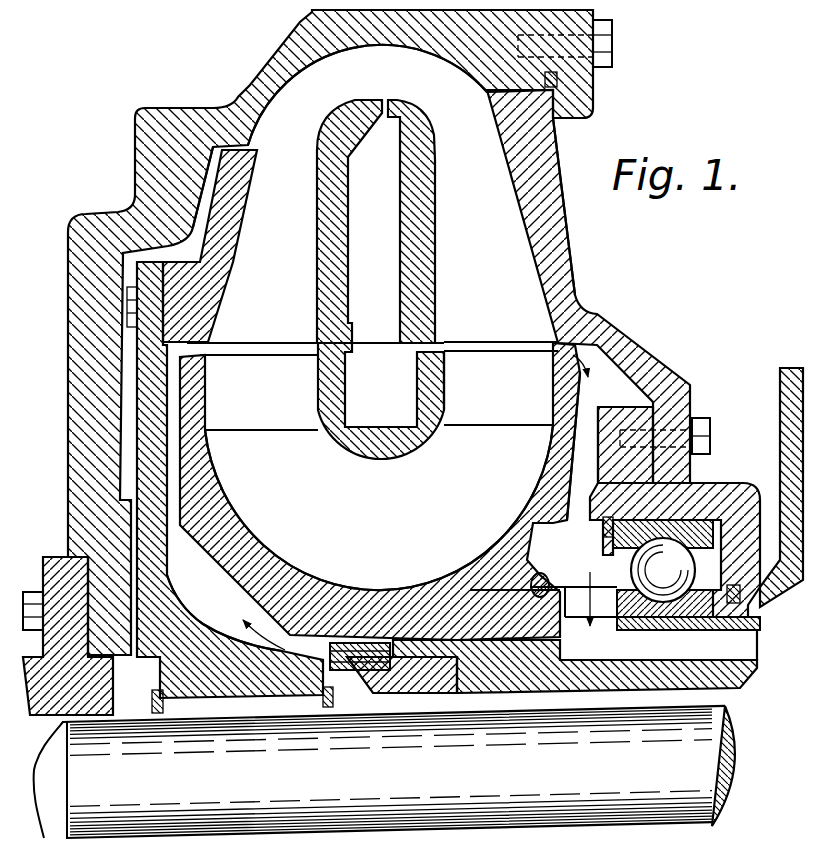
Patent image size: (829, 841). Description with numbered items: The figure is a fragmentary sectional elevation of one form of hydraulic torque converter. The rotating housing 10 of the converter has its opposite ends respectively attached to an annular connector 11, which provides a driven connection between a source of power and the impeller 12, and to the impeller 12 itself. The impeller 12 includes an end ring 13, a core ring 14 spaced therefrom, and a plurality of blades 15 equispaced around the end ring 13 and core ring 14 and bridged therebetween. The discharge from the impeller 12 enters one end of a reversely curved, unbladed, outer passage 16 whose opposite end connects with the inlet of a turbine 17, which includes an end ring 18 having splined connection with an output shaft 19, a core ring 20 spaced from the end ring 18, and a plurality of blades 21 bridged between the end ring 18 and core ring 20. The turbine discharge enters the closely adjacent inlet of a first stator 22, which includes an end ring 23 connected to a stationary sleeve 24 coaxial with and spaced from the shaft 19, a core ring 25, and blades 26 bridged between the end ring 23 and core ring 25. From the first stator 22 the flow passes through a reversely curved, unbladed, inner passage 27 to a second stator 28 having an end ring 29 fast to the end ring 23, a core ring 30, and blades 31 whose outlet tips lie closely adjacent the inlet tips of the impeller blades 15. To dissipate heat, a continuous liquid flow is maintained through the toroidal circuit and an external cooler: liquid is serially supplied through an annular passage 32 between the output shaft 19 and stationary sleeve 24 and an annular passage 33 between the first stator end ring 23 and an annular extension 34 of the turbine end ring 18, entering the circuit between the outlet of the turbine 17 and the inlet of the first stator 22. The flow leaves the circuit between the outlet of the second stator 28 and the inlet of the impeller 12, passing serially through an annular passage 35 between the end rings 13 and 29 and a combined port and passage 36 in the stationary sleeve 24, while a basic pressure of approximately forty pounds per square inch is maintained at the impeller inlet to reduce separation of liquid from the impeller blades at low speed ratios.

The rotating housing 10 is at (73, 375).
The annular connector 11 is at (52, 556).
The impeller 12 is at (580, 233).
The end ring 13 is at (578, 268).
The core ring 14 is at (434, 258).
The blades 15 is at (505, 300).
The outer passage 16 is at (392, 79).
The turbine 17 is at (199, 241).
The end ring 18 is at (219, 273).
The output shaft 19 is at (202, 776).
The core ring 20 is at (318, 227).
The blades 21 is at (292, 312).
The first stator 22 is at (260, 436).
The end ring 23 is at (217, 500).
The stationary sleeve 24 is at (735, 677).
The core ring 25 is at (343, 379).
The blades 26 is at (272, 404).
The inner passage 27 is at (388, 538).
The second stator 28 is at (482, 430).
The end ring 29 is at (549, 493).
The core ring 30 is at (443, 387).
The blades 31 is at (530, 396).
The annular passage 32 is at (700, 690).
The annular passage 33 is at (232, 606).
The annular extension 34 is at (169, 537).
The annular passage 35 is at (623, 402).
The combined port and passage 36 is at (690, 660).